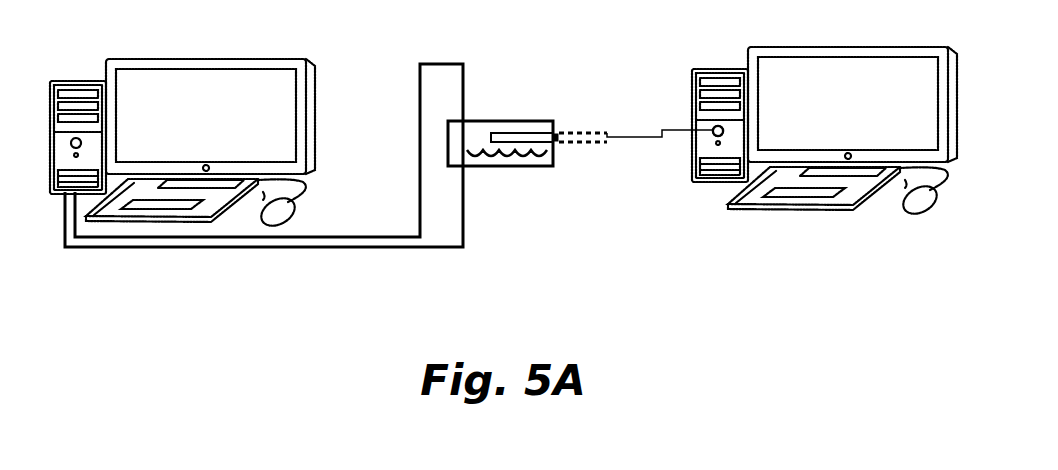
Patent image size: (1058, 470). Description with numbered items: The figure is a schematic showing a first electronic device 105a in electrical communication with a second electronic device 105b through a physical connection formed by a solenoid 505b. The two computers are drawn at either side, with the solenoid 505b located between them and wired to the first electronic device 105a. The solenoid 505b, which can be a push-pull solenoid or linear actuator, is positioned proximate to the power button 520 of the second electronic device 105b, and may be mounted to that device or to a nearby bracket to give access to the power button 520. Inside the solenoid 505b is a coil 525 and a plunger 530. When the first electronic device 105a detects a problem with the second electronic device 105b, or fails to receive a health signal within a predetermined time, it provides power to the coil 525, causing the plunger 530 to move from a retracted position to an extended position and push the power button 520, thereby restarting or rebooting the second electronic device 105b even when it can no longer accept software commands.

The first electronic device 105a is at (195, 60).
The second electronic device 105b is at (795, 208).
The solenoid 505b is at (499, 186).
The power button 520 is at (717, 126).
The coil 525 is at (540, 165).
The plunger 530 is at (540, 134).